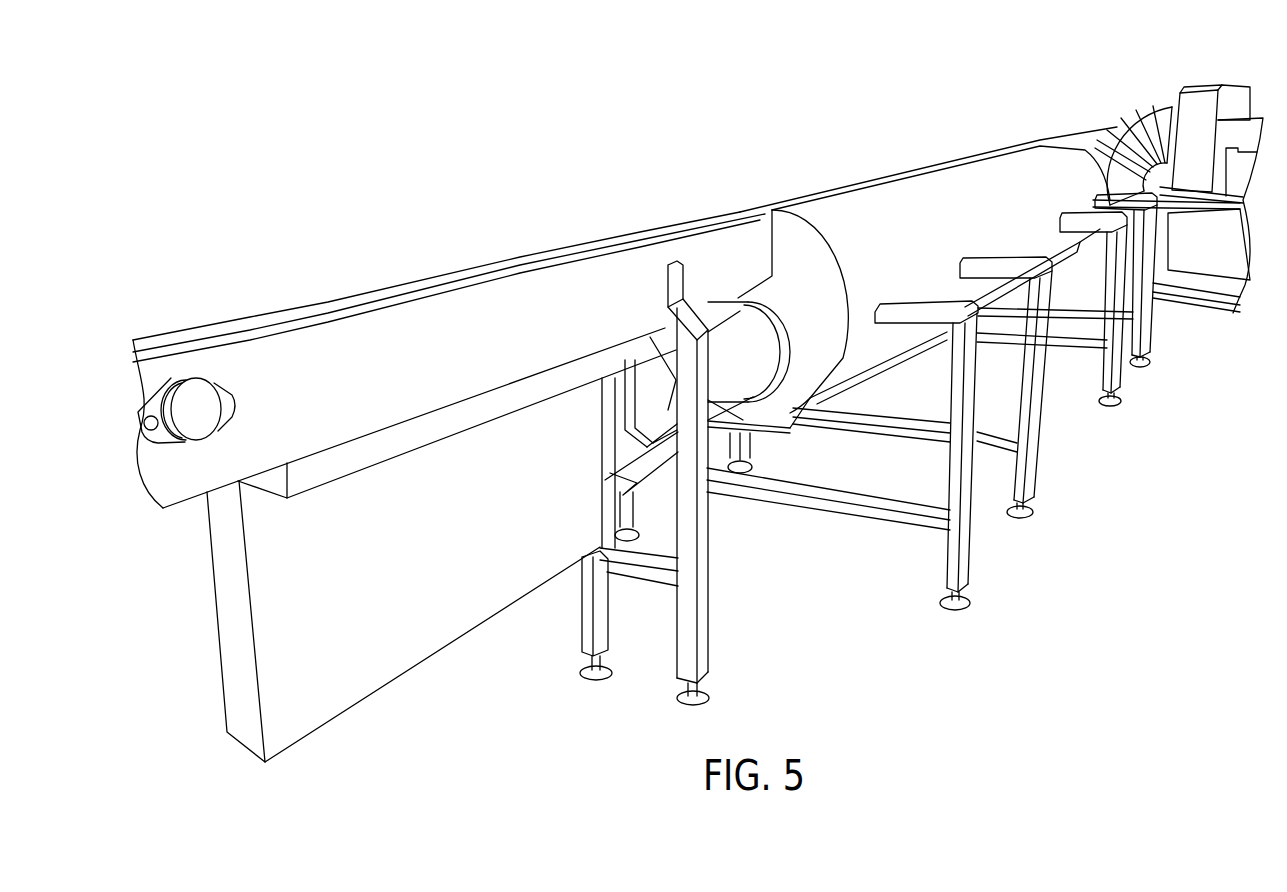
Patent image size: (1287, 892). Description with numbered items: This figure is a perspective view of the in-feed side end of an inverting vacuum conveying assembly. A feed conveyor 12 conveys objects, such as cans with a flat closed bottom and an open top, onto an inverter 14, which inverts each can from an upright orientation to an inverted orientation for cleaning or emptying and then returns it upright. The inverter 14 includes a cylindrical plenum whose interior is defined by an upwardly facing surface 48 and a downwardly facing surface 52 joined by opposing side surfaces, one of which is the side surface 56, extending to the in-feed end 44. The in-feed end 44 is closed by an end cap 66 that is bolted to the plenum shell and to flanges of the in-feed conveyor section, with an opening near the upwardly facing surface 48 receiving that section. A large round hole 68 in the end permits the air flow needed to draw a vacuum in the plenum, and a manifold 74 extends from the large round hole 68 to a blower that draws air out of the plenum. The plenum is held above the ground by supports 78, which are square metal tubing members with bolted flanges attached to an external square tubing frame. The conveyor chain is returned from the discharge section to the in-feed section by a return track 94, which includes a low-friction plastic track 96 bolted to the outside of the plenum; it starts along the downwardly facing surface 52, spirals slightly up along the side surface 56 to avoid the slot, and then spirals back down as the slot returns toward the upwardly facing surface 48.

The feed conveyor 12 is at (475, 226).
The inverter 14 is at (932, 130).
The in-feed end 44 is at (823, 323).
The upwardly facing surface 48 is at (840, 203).
The downwardly facing surface 52 is at (881, 398).
The side surface 56 is at (1031, 240).
The end cap 66 is at (808, 277).
The large round hole 68 is at (758, 380).
The manifold 74 is at (1147, 112).
The supports 78 is at (1010, 488).
The return track 94 is at (989, 317).
The low-friction plastic track 96 is at (913, 358).